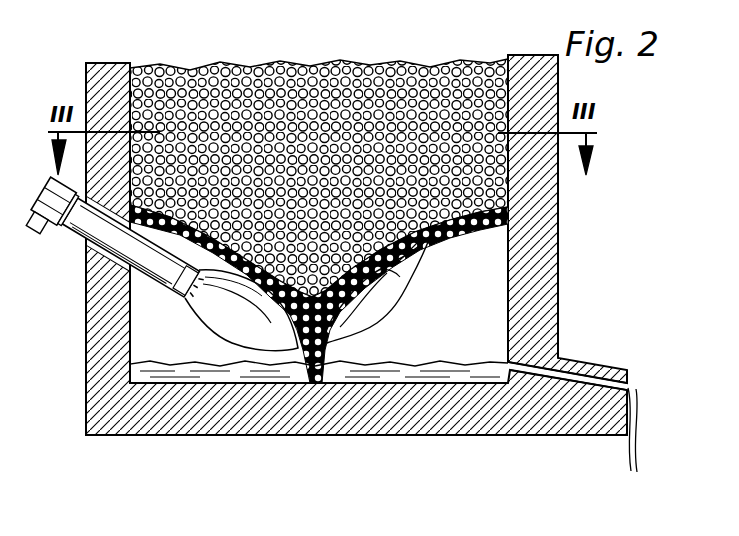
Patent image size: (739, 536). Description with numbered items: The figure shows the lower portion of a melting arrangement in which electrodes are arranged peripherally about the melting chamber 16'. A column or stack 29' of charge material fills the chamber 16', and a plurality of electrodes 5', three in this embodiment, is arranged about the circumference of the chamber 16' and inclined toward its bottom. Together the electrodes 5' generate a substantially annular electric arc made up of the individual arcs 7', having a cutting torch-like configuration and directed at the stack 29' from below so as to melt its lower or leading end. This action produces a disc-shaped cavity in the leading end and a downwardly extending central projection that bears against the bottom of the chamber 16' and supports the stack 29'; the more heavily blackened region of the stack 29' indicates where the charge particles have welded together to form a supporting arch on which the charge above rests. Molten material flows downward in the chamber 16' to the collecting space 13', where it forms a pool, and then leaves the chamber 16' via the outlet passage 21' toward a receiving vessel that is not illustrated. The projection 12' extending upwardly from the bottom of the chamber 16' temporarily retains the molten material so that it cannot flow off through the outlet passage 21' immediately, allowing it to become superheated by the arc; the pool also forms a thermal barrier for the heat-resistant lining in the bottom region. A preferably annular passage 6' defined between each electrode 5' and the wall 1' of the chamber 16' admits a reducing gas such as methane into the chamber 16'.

The wall 1' is at (580, 219).
The electrode 5' is at (116, 247).
The passage 6' is at (93, 270).
The individual arc 7' is at (241, 388).
The projection 12' is at (567, 423).
The collecting space 13' is at (338, 249).
The melting chamber 16' is at (319, 435).
The outlet passage 21' is at (650, 394).
The stack 29' is at (389, 178).